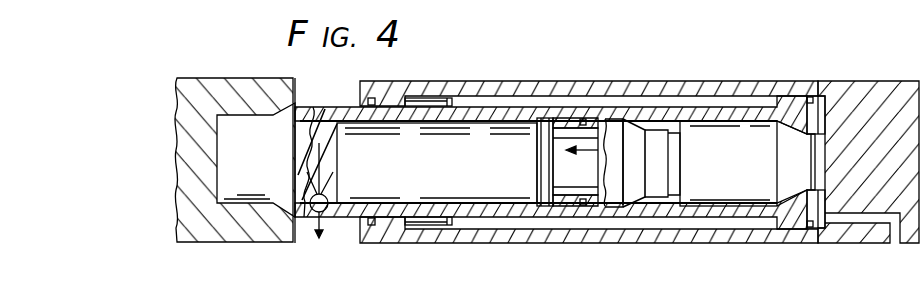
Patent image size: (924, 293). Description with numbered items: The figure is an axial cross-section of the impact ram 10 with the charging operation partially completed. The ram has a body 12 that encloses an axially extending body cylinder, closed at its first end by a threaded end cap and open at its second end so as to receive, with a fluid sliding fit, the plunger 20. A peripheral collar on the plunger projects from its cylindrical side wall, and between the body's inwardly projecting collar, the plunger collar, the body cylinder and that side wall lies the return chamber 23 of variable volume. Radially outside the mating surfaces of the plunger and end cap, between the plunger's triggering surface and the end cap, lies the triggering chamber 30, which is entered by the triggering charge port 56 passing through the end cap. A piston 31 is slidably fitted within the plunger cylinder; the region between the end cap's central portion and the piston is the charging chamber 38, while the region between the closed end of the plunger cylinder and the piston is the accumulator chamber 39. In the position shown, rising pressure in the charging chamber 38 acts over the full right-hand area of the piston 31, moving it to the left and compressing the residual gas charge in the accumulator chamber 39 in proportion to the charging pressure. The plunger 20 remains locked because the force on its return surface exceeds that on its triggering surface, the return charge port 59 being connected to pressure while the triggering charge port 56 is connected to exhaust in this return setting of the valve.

The impact ram 10 is at (124, 106).
The body 12 is at (518, 243).
The plunger 20 is at (342, 218).
The return chamber 23 is at (538, 97).
The triggering chamber 30 is at (833, 110).
The piston 31 is at (588, 191).
The charging chamber 38 is at (734, 153).
The accumulator chamber 39 is at (467, 158).
The triggering charge port 56 is at (897, 241).
The return charge port 59 is at (411, 229).